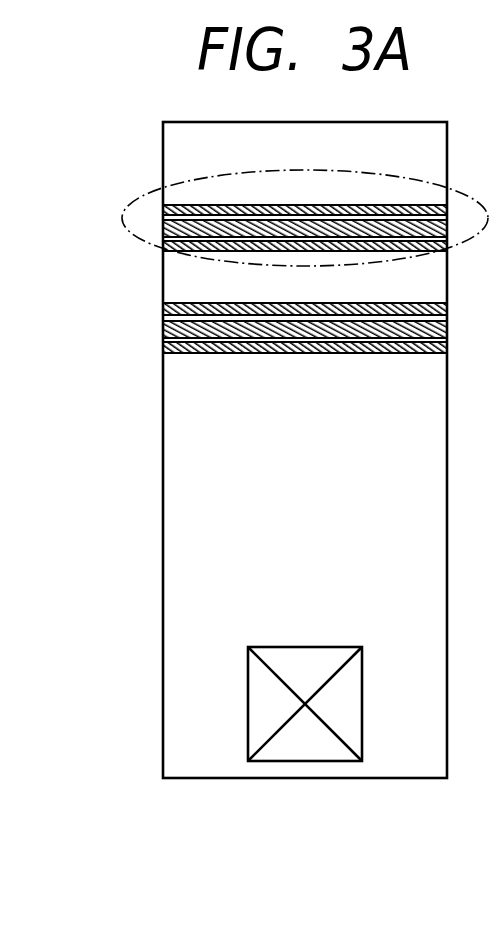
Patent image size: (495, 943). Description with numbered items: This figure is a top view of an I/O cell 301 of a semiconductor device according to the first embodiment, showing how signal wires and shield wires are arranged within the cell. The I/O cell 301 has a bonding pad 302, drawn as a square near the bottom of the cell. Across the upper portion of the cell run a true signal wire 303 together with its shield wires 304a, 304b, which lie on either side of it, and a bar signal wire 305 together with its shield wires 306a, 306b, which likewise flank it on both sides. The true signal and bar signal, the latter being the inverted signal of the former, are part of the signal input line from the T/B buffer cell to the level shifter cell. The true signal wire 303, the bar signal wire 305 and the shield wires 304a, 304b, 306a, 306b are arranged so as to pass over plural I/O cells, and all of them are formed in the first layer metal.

The I/O cell 301 is at (306, 778).
The bonding pad 302 is at (248, 703).
The true signal wire 303 is at (163, 327).
The shield wire 304a is at (163, 308).
The shield wire 304b is at (163, 345).
The bar signal wire 305 is at (163, 229).
The shield wire 306a is at (163, 208).
The shield wire 306b is at (163, 246).